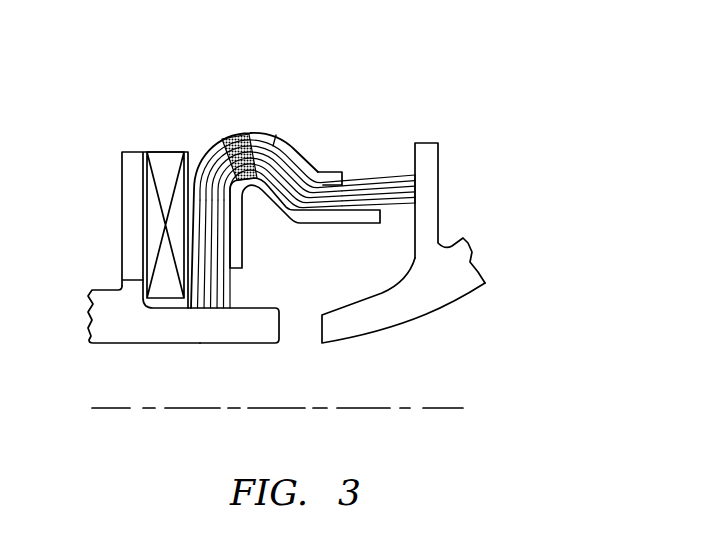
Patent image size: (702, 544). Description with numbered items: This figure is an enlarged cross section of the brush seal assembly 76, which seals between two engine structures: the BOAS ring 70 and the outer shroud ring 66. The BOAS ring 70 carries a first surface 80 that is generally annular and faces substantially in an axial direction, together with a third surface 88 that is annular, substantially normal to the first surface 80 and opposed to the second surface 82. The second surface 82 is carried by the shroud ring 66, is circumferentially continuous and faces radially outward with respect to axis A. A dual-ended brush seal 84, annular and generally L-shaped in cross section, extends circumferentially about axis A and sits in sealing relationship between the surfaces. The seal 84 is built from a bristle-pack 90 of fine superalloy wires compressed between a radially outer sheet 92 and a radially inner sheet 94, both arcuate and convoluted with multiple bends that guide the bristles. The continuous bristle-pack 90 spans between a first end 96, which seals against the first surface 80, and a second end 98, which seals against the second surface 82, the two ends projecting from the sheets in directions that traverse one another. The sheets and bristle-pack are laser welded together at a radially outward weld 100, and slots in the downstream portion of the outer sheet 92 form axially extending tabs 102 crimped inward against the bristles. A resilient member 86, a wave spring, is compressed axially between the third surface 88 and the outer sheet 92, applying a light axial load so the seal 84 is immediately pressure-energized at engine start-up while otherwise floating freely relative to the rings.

The shroud ring 66 is at (427, 319).
The BOAS ring 70 is at (115, 346).
The brush seal assembly 76 is at (295, 220).
The first surface 80 is at (247, 308).
The second surface 82 is at (413, 229).
The dual-ended brush seal 84 is at (302, 131).
The resilient member 86 is at (172, 152).
The third surface 88 is at (148, 174).
The bristle-pack 90 is at (368, 176).
The outer sheet 92 is at (264, 128).
The inner sheet 94 is at (292, 226).
The first end 96 is at (212, 300).
The second end 98 is at (418, 191).
The weld 100 is at (240, 132).
The tabs 102 is at (319, 164).
The axis A is at (438, 408).